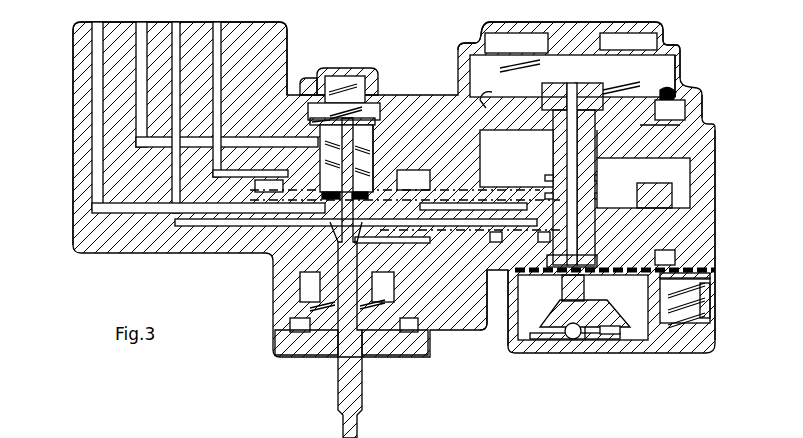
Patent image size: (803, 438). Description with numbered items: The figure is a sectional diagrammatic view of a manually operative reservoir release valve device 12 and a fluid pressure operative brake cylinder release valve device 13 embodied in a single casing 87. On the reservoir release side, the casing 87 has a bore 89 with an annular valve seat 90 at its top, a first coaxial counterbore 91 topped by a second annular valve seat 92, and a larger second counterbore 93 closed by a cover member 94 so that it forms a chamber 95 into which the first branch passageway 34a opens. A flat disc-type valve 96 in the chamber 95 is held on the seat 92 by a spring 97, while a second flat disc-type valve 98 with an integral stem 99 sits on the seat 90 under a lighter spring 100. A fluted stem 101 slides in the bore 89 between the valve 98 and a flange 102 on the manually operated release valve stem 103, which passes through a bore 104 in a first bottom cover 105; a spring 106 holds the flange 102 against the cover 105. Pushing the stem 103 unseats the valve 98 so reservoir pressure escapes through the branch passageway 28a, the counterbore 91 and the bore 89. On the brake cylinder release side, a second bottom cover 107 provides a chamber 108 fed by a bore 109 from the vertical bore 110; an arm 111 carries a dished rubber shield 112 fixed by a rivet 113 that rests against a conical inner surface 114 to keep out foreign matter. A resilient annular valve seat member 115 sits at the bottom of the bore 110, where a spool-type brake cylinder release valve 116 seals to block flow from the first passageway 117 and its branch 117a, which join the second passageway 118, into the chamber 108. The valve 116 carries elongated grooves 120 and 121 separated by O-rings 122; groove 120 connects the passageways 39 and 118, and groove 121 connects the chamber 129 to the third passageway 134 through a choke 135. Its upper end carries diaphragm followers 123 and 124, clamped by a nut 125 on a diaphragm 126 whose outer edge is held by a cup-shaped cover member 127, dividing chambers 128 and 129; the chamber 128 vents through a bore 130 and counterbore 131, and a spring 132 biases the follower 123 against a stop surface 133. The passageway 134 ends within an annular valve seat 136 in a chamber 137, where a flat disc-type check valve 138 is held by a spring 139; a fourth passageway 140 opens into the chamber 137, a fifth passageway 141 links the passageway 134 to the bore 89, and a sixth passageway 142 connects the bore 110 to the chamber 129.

The manually operative reservoir release valve device 12 is at (348, 66).
The brake cylinder release valve device 13 is at (726, 187).
The branch passageway 28a is at (92, 98).
The first branch passageway 34a is at (162, 130).
The passageway 39 is at (208, 105).
The casing 87 is at (278, 40).
The bore 89 is at (338, 258).
The annular valve seat 90 is at (332, 220).
The first coaxial counterbore 91 is at (383, 138).
The second annular valve seat 92 is at (300, 168).
The second counterbore 93 is at (380, 115).
The cover member 94 is at (366, 74).
The chamber 95 is at (322, 103).
The flat disc-type valve 96 is at (318, 123).
The spring 97 is at (364, 96).
The second flat disc-type valve 98 is at (368, 198).
The stem 99 is at (372, 166).
The spring 100 is at (366, 157).
The fluted stem 101 is at (358, 268).
The flange 102 is at (290, 330).
The manually operated release valve stem 103 is at (362, 400).
The bore 104 is at (392, 347).
The first bottom cover 105 is at (308, 355).
The spring 106 is at (388, 302).
The second bottom cover 107 is at (520, 347).
The chamber 108 is at (592, 318).
The bore 109 is at (585, 288).
The bore 110 is at (597, 261).
The horizontally disposed arm 111 is at (542, 340).
The dished circular rubber shield 112 is at (628, 340).
The rivet 113 is at (573, 340).
The conical inner surface 114 is at (620, 332).
The resilient annular valve seat member 115 is at (556, 278).
The spool-type brake cylinder release valve 116 is at (598, 165).
The first passageway 117 is at (538, 240).
The branch 117a is at (490, 238).
The second passageway 118 is at (187, 226).
The elongated peripheral annular groove 120 is at (596, 228).
The elongated peripheral annular groove 121 is at (598, 132).
The O-ring 122 is at (543, 187).
The diaphragm follower 123 is at (668, 126).
The diaphragm follower 124 is at (681, 80).
The nut 125 is at (543, 90).
The diaphragm 126 is at (695, 96).
The cup-shaped cover member 127 is at (662, 30).
The chamber 128 is at (678, 56).
The chamber 129 is at (686, 115).
The bore 130 is at (575, 84).
The coaxial counterbore 131 is at (612, 92).
The spring 132 is at (525, 58).
The stop surface 133 is at (550, 133).
The third passageway 134 is at (716, 160).
The restriction or choke 135 is at (655, 183).
The annular valve seat 136 is at (716, 252).
The chamber 137 is at (716, 297).
The flat disc-type check valve 138 is at (716, 278).
The spring 139 is at (716, 317).
The fourth passageway 140 is at (258, 186).
The fifth passageway 141 is at (412, 244).
The sixth passageway 142 is at (432, 178).